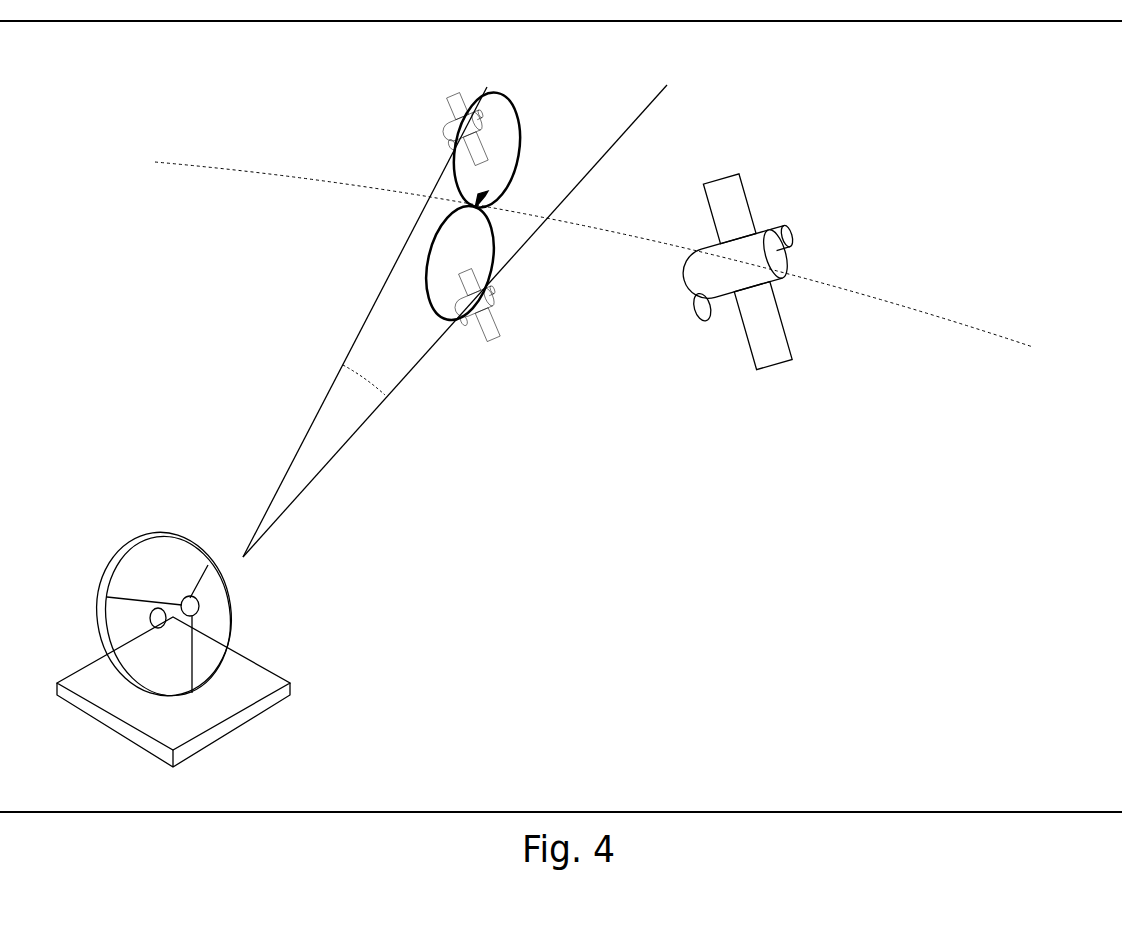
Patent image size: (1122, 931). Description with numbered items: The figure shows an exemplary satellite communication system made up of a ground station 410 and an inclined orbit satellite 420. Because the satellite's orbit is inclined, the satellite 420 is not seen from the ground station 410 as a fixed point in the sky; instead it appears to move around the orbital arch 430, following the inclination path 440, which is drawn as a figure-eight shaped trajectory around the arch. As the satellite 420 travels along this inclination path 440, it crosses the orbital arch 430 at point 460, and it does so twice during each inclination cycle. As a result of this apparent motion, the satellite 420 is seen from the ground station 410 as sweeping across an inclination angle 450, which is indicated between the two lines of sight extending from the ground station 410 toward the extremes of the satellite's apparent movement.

The ground station 410 is at (160, 645).
The inclined orbit satellite 420 is at (756, 273).
The orbital arch 430 is at (594, 242).
The inclination path 440 is at (490, 217).
The inclination angle 450 is at (371, 373).
The crossing point 460 is at (481, 197).